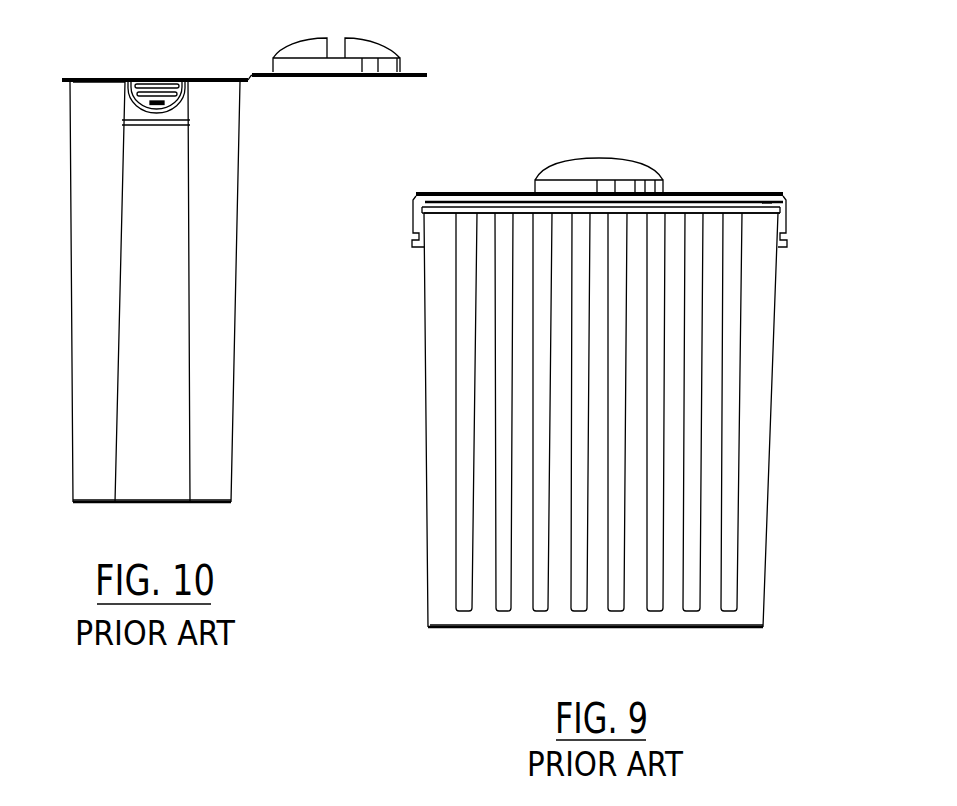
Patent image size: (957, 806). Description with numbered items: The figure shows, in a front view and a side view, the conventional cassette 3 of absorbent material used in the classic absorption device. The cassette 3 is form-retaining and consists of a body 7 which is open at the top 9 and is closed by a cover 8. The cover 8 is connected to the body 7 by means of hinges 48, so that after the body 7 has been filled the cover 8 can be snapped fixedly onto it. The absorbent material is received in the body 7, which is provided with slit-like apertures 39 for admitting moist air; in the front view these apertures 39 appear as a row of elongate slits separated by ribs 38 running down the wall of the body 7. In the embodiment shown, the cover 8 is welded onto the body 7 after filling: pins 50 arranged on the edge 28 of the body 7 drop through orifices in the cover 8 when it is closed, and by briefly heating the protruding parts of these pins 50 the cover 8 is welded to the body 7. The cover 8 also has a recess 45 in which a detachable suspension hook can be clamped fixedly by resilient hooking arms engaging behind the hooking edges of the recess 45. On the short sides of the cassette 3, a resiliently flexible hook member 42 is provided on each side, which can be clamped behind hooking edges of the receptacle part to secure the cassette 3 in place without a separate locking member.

In FIG. 10, the cassette 3 is at (234, 503).
In FIG. 9, the cassette 3 is at (432, 631).
In FIG. 10, the body 7 is at (237, 420).
In FIG. 9, the body 7 is at (424, 367).
In FIG. 10, the cover 8 is at (353, 79).
In FIG. 9, the cover 8 is at (716, 194).
In FIG. 10, the top 9 is at (100, 78).
In FIG. 9, the top 9 is at (757, 195).
In FIG. 10, the edge 28 is at (105, 87).
In FIG. 9, the edge 28 is at (503, 215).
In FIG. 9, the rib 38 is at (485, 600).
In FIG. 9, the slit-like apertures 39 is at (730, 605).
In FIG. 10, the hook member 42 is at (160, 93).
In FIG. 9, the hook member 42 is at (414, 226).
In FIG. 10, the recess 45 is at (372, 47).
In FIG. 9, the recess 45 is at (615, 168).
In FIG. 10, the hinges 48 is at (248, 77).
In FIG. 10, the pins 50 is at (72, 78).
In FIG. 9, the pins 50 is at (487, 193).